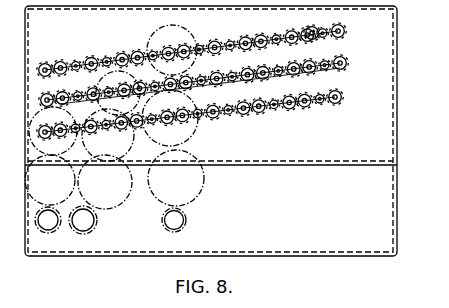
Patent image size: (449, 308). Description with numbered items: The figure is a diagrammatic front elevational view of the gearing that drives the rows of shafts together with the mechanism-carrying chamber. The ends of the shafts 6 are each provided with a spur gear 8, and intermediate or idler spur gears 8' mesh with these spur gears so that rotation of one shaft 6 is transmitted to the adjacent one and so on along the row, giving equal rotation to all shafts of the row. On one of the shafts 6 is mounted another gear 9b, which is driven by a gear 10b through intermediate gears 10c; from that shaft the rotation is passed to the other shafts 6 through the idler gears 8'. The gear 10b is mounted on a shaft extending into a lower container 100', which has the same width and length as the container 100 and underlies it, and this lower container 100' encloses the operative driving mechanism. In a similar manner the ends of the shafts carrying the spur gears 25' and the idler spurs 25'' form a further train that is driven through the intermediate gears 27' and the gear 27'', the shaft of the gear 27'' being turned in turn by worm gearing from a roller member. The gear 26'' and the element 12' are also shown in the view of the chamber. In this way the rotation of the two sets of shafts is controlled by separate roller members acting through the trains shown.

The container 100 is at (198, 131).
The lower container 100' is at (212, 147).
The shafts 6 is at (56, 62).
The spur gear 8 is at (200, 80).
The intermediate or idler spur gears 8' is at (312, 70).
The gear 9b is at (190, 35).
The spur gears 25' is at (207, 81).
The idler spurs 25'' is at (219, 86).
The roller 26'' is at (105, 93).
The intermediate gears 27' is at (102, 135).
The gear 27'' is at (100, 200).
The gear 10b is at (187, 220).
The intermediate gears 10c is at (200, 128).
The roller 12' is at (37, 194).